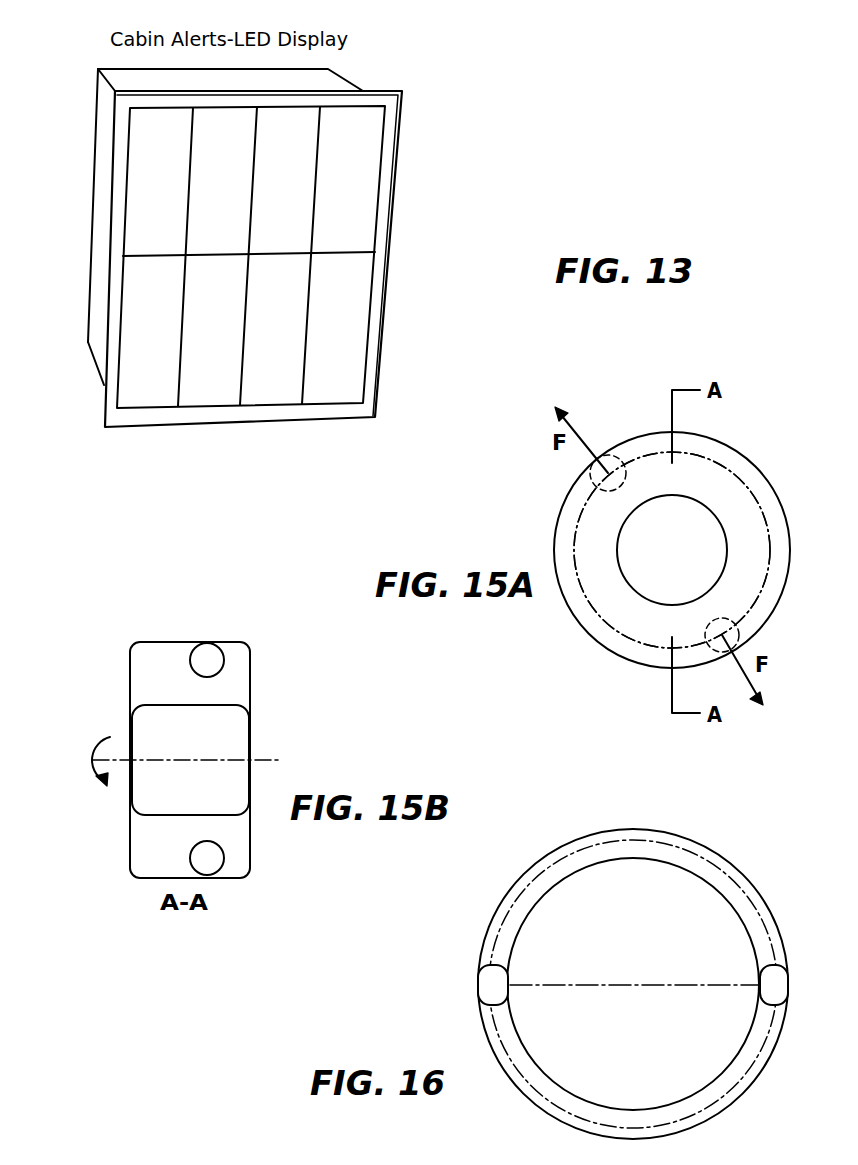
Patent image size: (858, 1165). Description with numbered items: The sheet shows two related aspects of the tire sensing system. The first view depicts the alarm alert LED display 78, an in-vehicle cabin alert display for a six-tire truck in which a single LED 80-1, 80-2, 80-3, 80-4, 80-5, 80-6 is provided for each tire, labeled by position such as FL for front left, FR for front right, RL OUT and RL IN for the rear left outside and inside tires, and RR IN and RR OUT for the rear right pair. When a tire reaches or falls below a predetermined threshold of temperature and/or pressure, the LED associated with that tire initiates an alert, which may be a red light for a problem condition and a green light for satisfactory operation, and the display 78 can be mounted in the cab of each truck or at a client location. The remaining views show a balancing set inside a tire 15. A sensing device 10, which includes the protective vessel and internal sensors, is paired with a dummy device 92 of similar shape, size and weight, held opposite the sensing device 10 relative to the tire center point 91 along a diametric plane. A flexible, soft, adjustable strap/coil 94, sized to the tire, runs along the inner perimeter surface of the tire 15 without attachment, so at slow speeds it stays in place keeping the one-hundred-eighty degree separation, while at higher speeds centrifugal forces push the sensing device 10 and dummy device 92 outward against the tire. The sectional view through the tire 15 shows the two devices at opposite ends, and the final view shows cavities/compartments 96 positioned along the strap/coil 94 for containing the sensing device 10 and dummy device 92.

In FIG. 13, the alarm alert LED display 78 is at (437, 237).
In FIG. 13, the LED 80-1 is at (232, 125).
In FIG. 13, the LED 80-2 is at (287, 223).
In FIG. 13, the LED 80-3 is at (128, 388).
In FIG. 13, the LED 80-4 is at (208, 385).
In FIG. 13, the LED 80-5 is at (280, 393).
In FIG. 13, the LED 80-6 is at (365, 300).
In FIG. 15A, the tire 15 is at (590, 640).
In FIG. 15B, the tire 15 is at (250, 868).
In FIG. 15A, the tire center point 91 is at (673, 550).
In FIG. 15A, the dummy device 92 is at (615, 458).
In FIG. 15B, the dummy device 92 is at (212, 662).
In FIG. 15A, the strap/coil 94 is at (723, 457).
In FIG. 16, the strap/coil 94 is at (703, 1118).
In FIG. 15A, the sensing device 10 is at (737, 635).
In FIG. 15B, the sensing device 10 is at (213, 850).
In FIG. 16, the cavities/compartments 96 is at (508, 973).